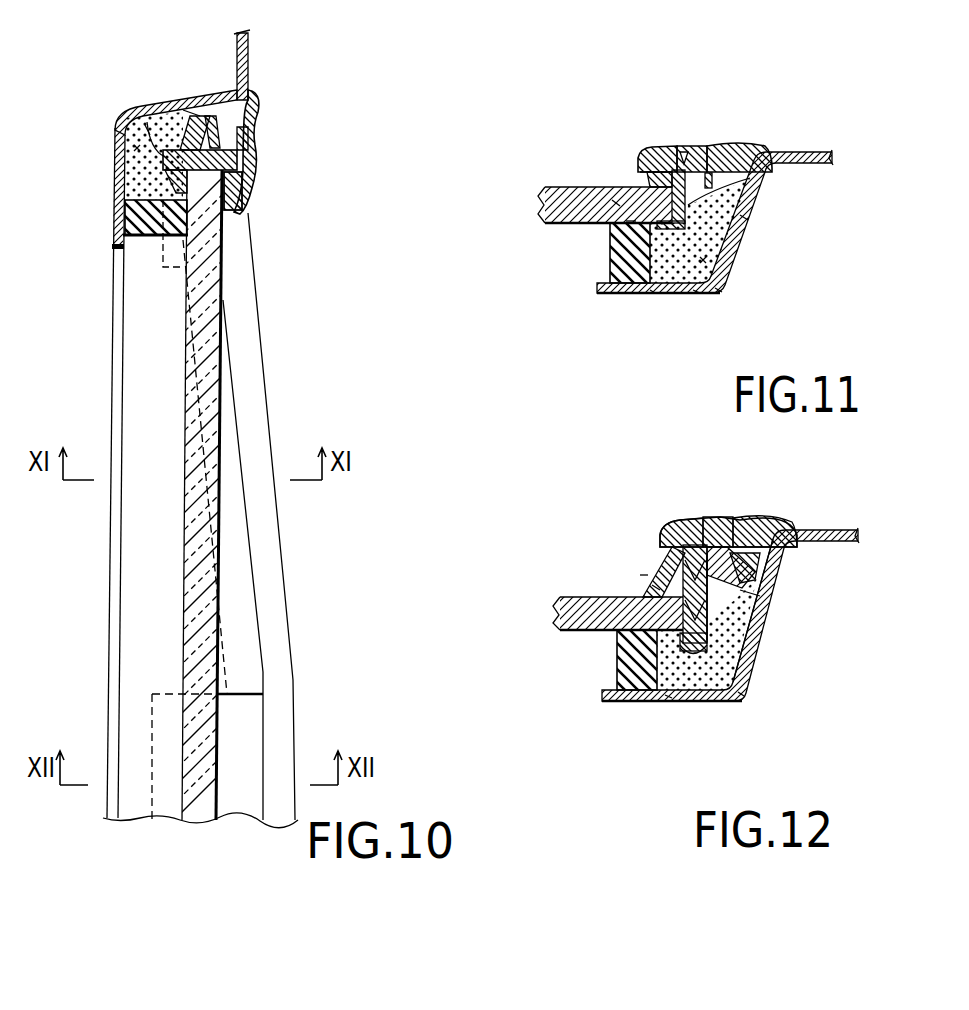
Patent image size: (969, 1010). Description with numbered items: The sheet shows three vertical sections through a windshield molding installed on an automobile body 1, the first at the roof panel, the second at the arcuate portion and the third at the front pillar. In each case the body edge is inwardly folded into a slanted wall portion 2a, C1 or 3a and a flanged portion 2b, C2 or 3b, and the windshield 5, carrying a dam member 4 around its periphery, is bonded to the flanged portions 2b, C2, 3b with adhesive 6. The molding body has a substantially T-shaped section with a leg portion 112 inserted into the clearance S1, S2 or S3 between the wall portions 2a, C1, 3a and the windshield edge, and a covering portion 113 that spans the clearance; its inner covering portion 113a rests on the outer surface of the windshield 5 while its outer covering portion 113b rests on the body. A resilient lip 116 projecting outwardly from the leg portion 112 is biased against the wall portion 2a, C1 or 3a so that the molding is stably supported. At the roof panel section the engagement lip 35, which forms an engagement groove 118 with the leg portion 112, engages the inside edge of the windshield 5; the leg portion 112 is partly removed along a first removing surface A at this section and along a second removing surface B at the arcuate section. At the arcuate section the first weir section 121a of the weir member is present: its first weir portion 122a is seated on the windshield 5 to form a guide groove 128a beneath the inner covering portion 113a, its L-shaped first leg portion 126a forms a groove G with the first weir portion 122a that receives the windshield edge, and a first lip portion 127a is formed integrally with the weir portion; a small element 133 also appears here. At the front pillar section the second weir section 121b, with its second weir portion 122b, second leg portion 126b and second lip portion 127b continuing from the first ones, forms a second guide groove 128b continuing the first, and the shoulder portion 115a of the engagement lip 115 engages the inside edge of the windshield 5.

In FIG. 10, the automobile body 1 is at (297, 47).
In FIG. 11, the automobile body 1 is at (795, 155).
In FIG. 12, the automobile body 1 is at (832, 527).
In FIG. 10, the slanted wall portion 2a is at (163, 104).
In FIG. 10, the flanged portion 2b is at (118, 207).
In FIG. 12, the slanted wall portion 3a is at (752, 655).
In FIG. 12, the flanged portion 3b is at (687, 712).
In FIG. 10, the dam member 4 is at (140, 218).
In FIG. 11, the dam member 4 is at (632, 295).
In FIG. 12, the dam member 4 is at (633, 703).
In FIG. 10, the windshield 5 is at (187, 267).
In FIG. 11, the windshield 5 is at (580, 185).
In FIG. 12, the windshield 5 is at (568, 630).
In FIG. 10, the adhesive 6 is at (130, 160).
In FIG. 11, the adhesive 6 is at (673, 295).
In FIG. 12, the adhesive 6 is at (708, 705).
In FIG. 10, the engagement lip 35 is at (176, 186).
In FIG. 12, the engagement lip 35 is at (618, 630).
In FIG. 10, the leg portion 112 is at (214, 146).
In FIG. 11, the leg portion 112 is at (615, 200).
In FIG. 12, the leg portion 112 is at (733, 618).
In FIG. 10, the covering portion 113 is at (248, 167).
In FIG. 12, the covering portion 113 is at (712, 517).
In FIG. 10, the inner covering portion 113a is at (240, 200).
In FIG. 11, the inner covering portion 113a is at (655, 148).
In FIG. 12, the inner covering portion 113a is at (688, 517).
In FIG. 10, the outer covering portion 113b is at (255, 104).
In FIG. 11, the outer covering portion 113b is at (748, 147).
In FIG. 12, the outer covering portion 113b is at (757, 520).
In FIG. 12, the engagement lip 115 is at (678, 703).
In FIG. 12, the shoulder portion 115a is at (668, 698).
In FIG. 10, the resilient lip 116 is at (187, 110).
In FIG. 11, the resilient lip 116 is at (742, 213).
In FIG. 12, the resilient lip 116 is at (750, 583).
In FIG. 12, the engagement groove 118 is at (750, 596).
In FIG. 11, the first weir section 121a is at (638, 172).
In FIG. 12, the second weir section 121b is at (641, 568).
In FIG. 11, the first weir portion 122a is at (676, 160).
In FIG. 12, the second weir portion 122b is at (653, 593).
In FIG. 11, the first leg portion 126a is at (697, 295).
In FIG. 12, the second leg portion 126b is at (727, 527).
In FIG. 11, the first lip portion 127a is at (690, 160).
In FIG. 12, the second lip portion 127b is at (700, 520).
In FIG. 11, the guide groove 128a is at (635, 178).
In FIG. 12, the second guide groove 128b is at (656, 587).
In FIG. 11, the pin 133 is at (765, 172).
In FIG. 10, the first removing surface A is at (146, 125).
In FIG. 11, the second removing surface B is at (720, 246).
In FIG. 11, the slanted arcuate wall portion C1 is at (745, 218).
In FIG. 11, the flanged portion C2 is at (652, 295).
In FIG. 11, the groove G is at (628, 222).
In FIG. 10, the clearance S1 is at (136, 147).
In FIG. 11, the clearance S2 is at (718, 290).
In FIG. 12, the clearance S3 is at (740, 693).